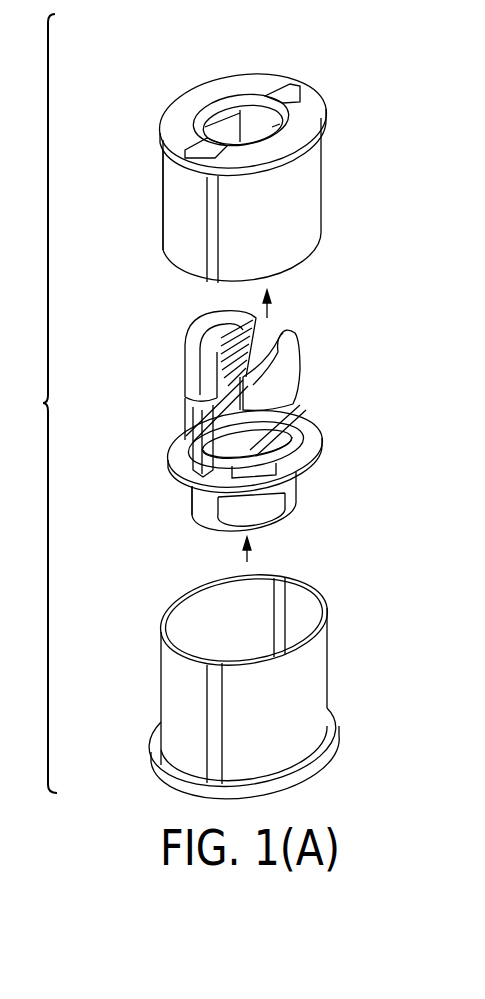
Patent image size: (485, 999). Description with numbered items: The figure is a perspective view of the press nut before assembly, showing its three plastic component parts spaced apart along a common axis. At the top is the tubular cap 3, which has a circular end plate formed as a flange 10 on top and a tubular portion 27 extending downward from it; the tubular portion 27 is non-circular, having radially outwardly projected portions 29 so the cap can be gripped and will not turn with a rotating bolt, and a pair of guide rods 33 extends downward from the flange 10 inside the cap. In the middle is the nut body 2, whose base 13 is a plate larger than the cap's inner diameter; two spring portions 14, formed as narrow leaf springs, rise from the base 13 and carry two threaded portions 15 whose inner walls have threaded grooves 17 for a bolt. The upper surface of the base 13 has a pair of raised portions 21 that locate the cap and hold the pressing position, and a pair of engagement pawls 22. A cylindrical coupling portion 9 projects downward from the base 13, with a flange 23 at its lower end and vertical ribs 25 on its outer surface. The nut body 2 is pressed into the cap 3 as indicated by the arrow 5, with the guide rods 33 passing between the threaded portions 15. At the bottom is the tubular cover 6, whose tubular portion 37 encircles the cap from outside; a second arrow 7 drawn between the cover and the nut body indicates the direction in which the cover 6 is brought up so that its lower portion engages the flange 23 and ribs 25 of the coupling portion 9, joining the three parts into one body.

The nut body 2 is at (148, 437).
The tubular cap 3 is at (158, 96).
The arrow 5 is at (267, 318).
The tubular cover 6 is at (145, 698).
The assembly direction arrow 7 is at (247, 562).
The coupling portion 9 is at (275, 500).
The flange 10 is at (172, 118).
The base 13 is at (180, 478).
The spring portions 14 is at (208, 403).
The threaded portions 15 is at (190, 373).
The threaded grooves 17 is at (232, 350).
The raised portions 21 is at (280, 450).
The engagement pawls 22 is at (183, 457).
The flange 23 is at (232, 527).
The ribs 25 is at (203, 508).
The tubular portion 27 is at (295, 199).
The projected portions 29 is at (175, 225).
The guide rods 33 is at (250, 117).
The tubular portion 37 is at (313, 673).